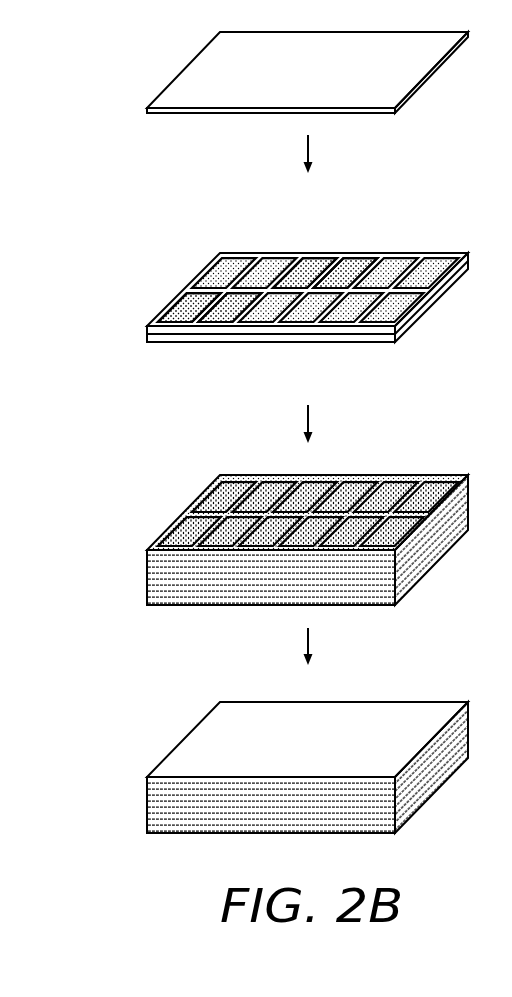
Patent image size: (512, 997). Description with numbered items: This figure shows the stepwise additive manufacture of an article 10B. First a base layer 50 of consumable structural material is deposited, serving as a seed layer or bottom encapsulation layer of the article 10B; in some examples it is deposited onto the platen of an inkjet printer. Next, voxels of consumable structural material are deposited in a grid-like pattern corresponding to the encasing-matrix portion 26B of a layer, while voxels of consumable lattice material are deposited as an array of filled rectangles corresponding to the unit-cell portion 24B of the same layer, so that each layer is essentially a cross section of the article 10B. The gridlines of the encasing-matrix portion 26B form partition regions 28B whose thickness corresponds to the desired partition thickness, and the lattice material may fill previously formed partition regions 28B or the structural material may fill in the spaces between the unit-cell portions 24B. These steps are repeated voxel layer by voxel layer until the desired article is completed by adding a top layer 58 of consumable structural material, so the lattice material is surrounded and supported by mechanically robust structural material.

The article 10B is at (300, 425).
The base layer 50 is at (321, 82).
The unit-cell portion 24B is at (308, 273).
The encasing-matrix portion 26B is at (338, 265).
The partition regions 28B is at (224, 292).
The top layer 58 is at (321, 754).